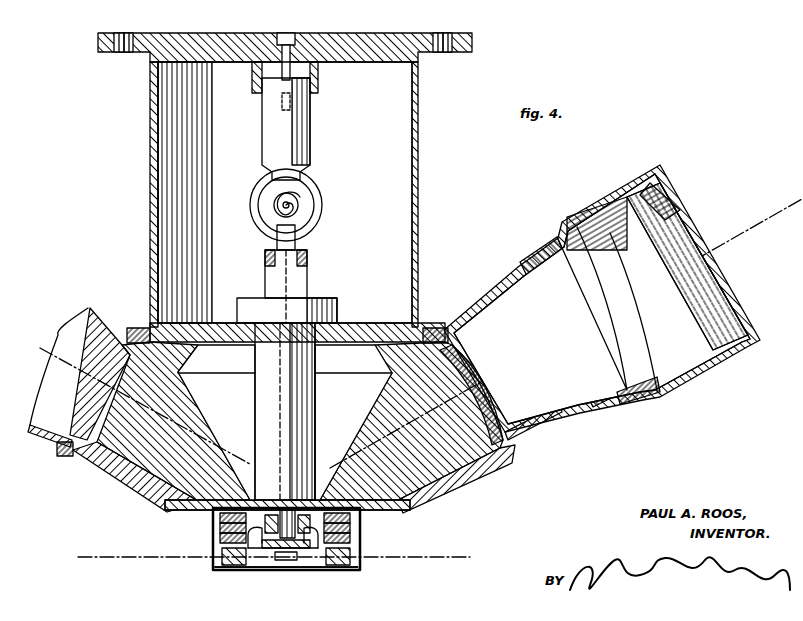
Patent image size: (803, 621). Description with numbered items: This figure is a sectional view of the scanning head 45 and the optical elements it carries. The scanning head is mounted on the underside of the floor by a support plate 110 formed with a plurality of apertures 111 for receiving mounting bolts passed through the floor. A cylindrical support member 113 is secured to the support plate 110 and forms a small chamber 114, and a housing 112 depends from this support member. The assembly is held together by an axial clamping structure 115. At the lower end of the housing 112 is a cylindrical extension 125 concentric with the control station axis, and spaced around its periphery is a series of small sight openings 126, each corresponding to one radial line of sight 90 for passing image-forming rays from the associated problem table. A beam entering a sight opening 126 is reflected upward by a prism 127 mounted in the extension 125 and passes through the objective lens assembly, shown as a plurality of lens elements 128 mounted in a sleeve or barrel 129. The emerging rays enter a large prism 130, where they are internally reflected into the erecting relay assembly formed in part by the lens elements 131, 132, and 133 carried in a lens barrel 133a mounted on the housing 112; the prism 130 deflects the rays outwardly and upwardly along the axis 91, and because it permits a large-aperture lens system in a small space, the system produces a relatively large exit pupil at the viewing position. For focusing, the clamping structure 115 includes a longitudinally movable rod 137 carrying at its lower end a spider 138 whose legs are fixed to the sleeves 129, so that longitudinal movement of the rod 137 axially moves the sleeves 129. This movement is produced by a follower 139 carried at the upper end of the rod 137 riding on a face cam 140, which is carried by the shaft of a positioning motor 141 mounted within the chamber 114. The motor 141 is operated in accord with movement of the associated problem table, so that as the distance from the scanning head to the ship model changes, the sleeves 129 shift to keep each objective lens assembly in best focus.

The scanning head 45 is at (150, 205).
The radial line of sight 90 is at (103, 557).
The axis 91 is at (515, 372).
The support plate 110 is at (472, 37).
The apertures 111 is at (147, 33).
The housing 112 is at (128, 490).
The cylindrical support member 113 is at (418, 170).
The chamber 114 is at (392, 130).
The axial clamping structure 115 is at (312, 123).
The cylindrical extension 125 is at (232, 572).
The sight openings 126 is at (210, 560).
The prism 127 is at (350, 572).
The lens elements 128 is at (220, 530).
The sleeve or barrel 129 is at (220, 540).
The prism 130 is at (205, 432).
The lens element 131 is at (82, 413).
The lens element 132 is at (600, 409).
The lens element 133 is at (725, 342).
The lens barrel 133a is at (660, 398).
The rod 137 is at (308, 245).
The spider 138 is at (267, 560).
The follower 139 is at (275, 228).
The face cam 140 is at (298, 208).
The positioning motor 141 is at (318, 195).